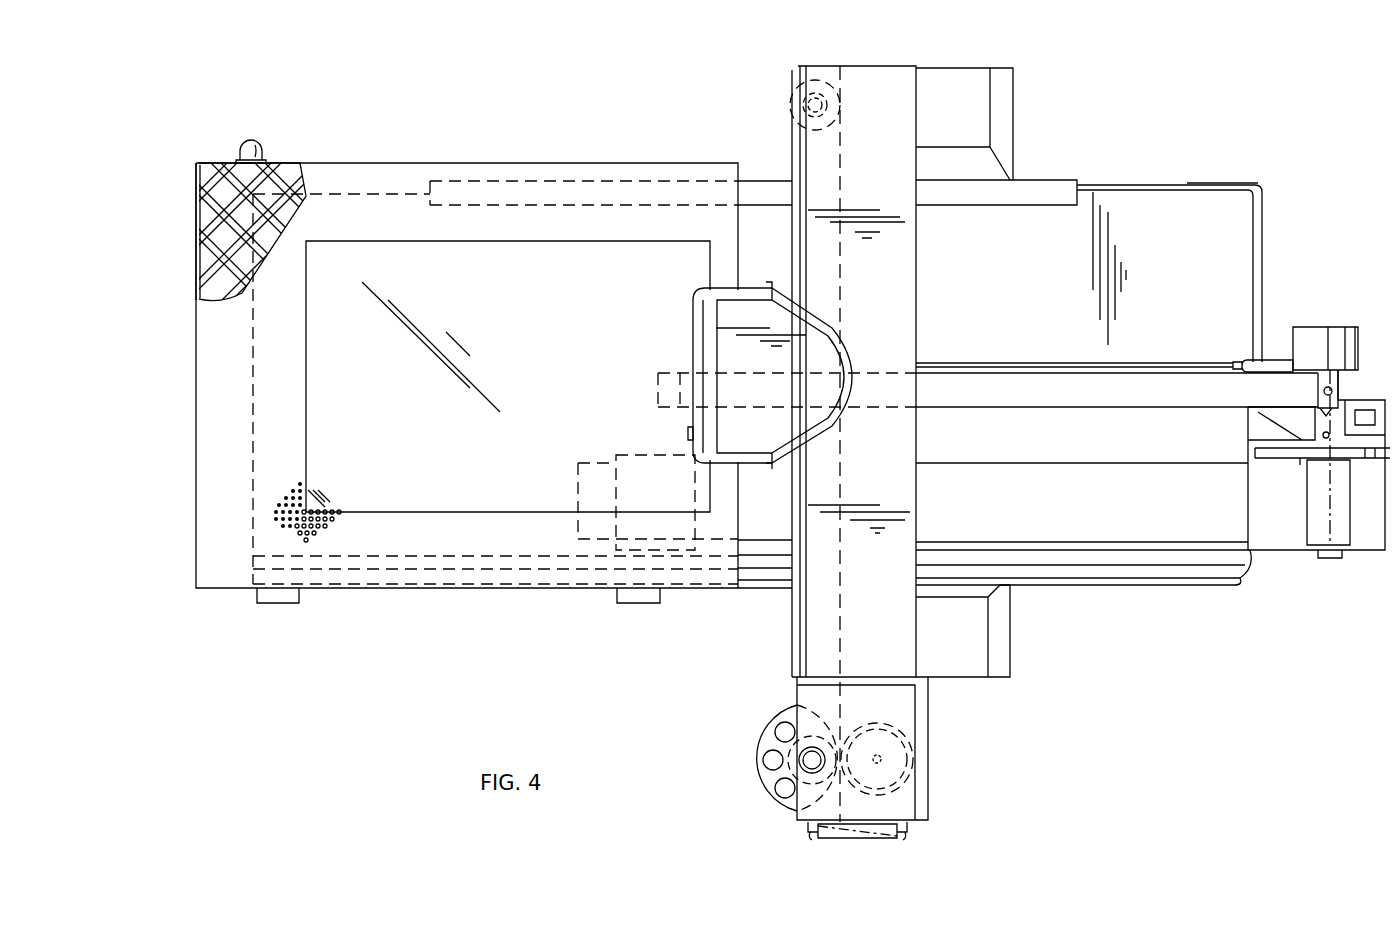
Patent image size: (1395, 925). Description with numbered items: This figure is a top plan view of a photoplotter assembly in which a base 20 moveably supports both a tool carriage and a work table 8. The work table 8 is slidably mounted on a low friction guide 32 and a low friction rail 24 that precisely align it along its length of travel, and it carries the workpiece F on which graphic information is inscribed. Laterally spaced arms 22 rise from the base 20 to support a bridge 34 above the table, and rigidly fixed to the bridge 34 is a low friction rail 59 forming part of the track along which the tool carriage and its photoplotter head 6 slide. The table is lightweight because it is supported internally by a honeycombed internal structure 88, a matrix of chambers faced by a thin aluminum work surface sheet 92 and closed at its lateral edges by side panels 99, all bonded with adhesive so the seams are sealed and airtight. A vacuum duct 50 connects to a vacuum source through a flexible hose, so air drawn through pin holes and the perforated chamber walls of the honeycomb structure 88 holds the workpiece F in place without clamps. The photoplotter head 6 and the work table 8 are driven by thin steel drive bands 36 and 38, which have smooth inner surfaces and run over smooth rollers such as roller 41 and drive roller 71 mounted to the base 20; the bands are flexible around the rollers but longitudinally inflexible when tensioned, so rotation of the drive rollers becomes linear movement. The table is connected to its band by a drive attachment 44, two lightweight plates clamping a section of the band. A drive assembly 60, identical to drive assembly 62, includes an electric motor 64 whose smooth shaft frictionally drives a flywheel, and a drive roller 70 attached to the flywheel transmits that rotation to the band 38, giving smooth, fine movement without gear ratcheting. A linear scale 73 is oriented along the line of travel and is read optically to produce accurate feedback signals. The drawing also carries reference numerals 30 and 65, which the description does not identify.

The work table 8 is at (219, 590).
The workpiece F is at (421, 241).
The honeycombed internal structure 88 is at (292, 201).
The side panels 99 is at (198, 167).
The vacuum duct 50 is at (261, 145).
The feet 30 is at (300, 598).
The table work surface sheet 92 is at (403, 568).
The photoplotter head 6 is at (700, 298).
The drive attachment 44 is at (652, 455).
The drive band 36 is at (791, 156).
The bridge 34 is at (918, 268).
The roller 41 is at (827, 92).
The low friction rail 59 is at (795, 178).
The arms 22 is at (1004, 150).
The low friction rail 24 is at (1068, 180).
The base 20 is at (1153, 201).
The electric motor 64 is at (1302, 337).
The linear scale 73 is at (1031, 380).
The drive band 38 is at (1094, 477).
The drive roller 70 is at (1321, 462).
The drive assembly 60 is at (1345, 564).
The low friction guide 32 is at (1163, 578).
The drive assembly 62 is at (938, 742).
The gear 65 is at (905, 792).
The drive roller 71 is at (791, 758).